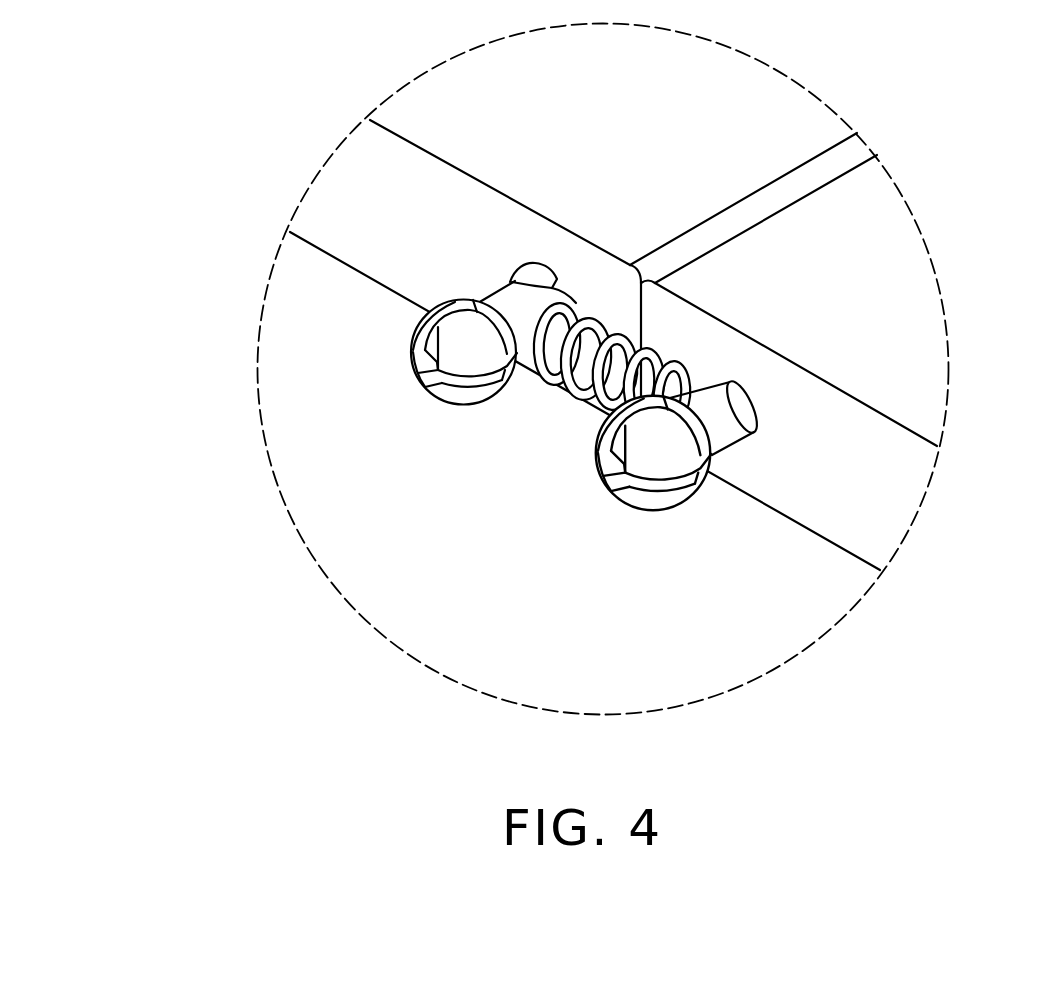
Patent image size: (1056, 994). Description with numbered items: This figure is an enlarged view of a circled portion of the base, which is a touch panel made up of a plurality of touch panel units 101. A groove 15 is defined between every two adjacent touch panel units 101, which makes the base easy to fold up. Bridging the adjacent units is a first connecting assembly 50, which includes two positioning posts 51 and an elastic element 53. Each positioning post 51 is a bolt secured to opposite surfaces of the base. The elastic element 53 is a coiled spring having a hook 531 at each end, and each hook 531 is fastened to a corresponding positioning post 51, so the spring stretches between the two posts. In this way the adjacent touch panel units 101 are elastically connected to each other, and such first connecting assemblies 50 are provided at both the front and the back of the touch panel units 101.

The touch panel unit 101 is at (740, 87).
The groove 15 is at (840, 158).
The first connecting assembly 50 is at (570, 461).
The positioning post 51 is at (568, 563).
The elastic element 53 is at (560, 388).
The hook 531 is at (527, 270).